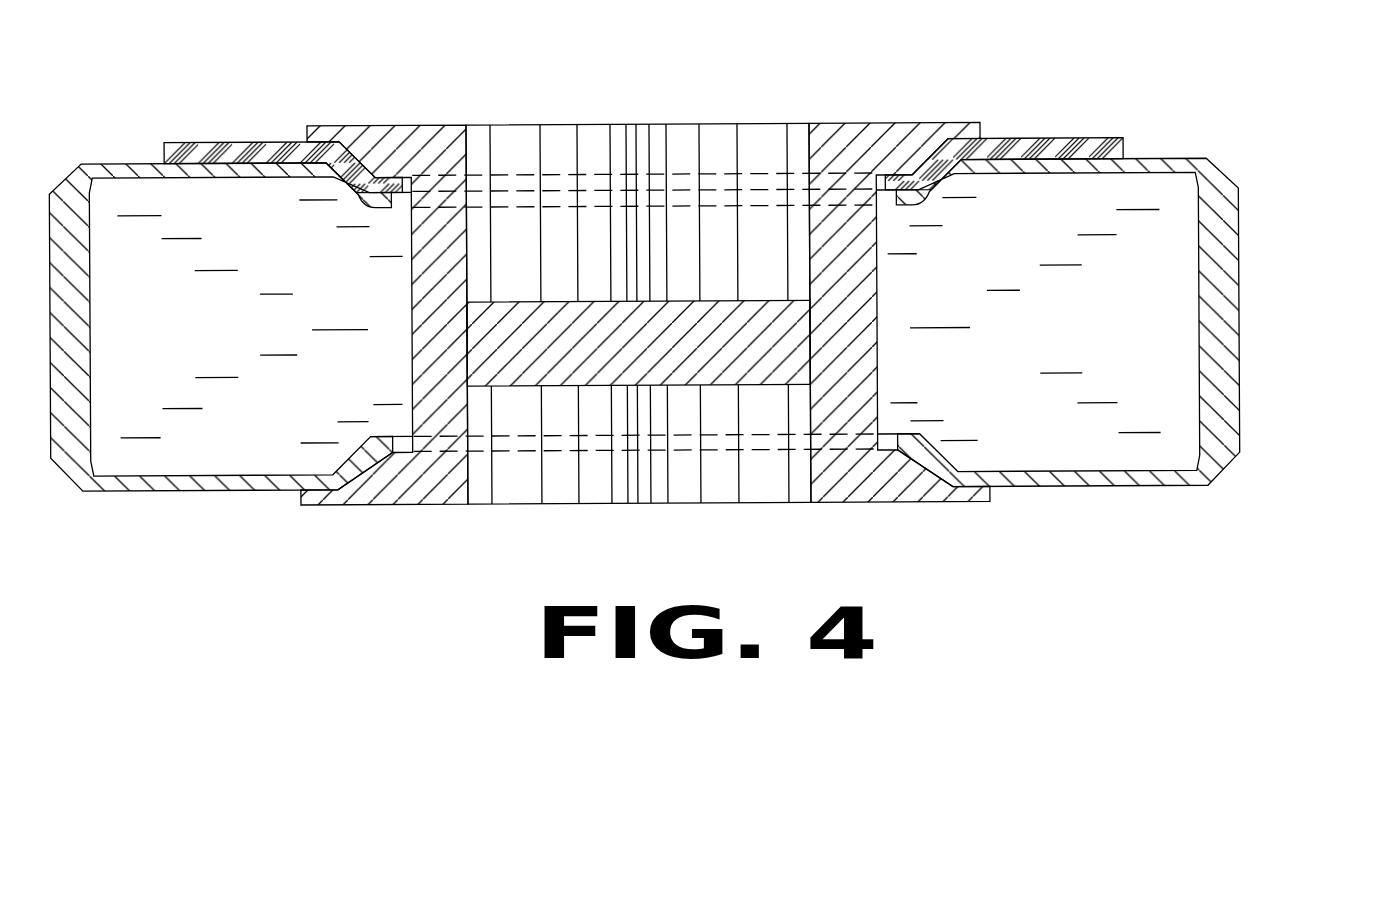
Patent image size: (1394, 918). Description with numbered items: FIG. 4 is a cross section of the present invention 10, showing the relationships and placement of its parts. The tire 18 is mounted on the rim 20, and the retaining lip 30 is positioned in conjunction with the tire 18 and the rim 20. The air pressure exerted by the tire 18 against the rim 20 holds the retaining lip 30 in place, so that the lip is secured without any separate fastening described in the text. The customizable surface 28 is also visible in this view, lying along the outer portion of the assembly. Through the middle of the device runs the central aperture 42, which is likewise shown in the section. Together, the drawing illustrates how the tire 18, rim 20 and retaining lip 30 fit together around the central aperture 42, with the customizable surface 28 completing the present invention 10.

The present invention 10 is at (710, 265).
The tire 18 is at (1238, 412).
The rim 20 is at (430, 143).
The customizable surface 28 is at (1058, 141).
The retaining lip 30 is at (392, 208).
The central aperture 42 is at (567, 168).